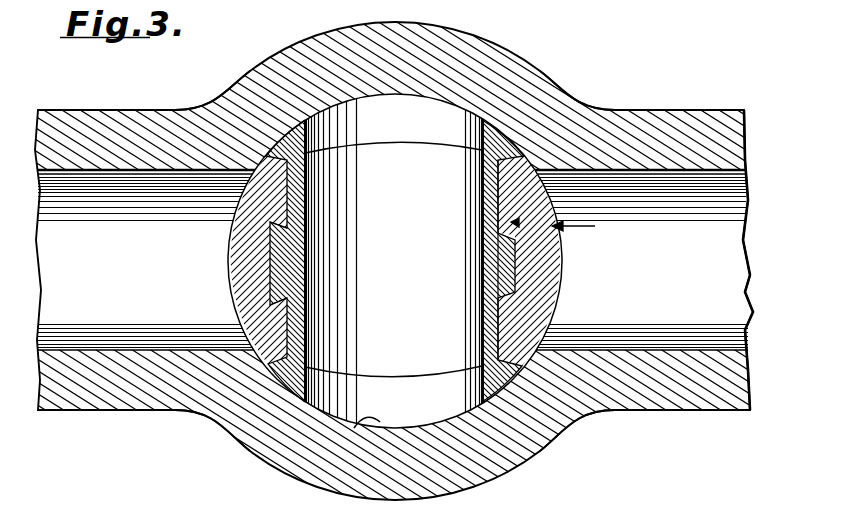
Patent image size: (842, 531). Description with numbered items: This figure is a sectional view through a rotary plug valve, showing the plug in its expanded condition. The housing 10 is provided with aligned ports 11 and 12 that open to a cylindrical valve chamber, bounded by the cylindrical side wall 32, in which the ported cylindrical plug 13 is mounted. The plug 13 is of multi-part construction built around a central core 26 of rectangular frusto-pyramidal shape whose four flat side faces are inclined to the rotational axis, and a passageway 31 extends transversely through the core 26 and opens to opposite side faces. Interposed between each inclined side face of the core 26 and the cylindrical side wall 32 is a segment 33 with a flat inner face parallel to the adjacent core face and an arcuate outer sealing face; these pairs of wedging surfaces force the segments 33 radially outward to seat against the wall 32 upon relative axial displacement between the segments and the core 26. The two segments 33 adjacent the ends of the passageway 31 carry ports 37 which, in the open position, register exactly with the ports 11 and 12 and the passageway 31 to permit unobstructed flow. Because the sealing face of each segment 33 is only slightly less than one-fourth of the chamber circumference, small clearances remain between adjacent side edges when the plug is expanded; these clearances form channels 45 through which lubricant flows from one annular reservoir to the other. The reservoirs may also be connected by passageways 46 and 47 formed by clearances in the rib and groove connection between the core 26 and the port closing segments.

The housing 10 is at (520, 462).
The port 11 is at (202, 350).
The port 12 is at (582, 348).
The plug 13 is at (565, 227).
The core 26 is at (492, 338).
The passageway 31 is at (483, 283).
The cylindrical side wall 32 is at (360, 430).
The segment 33 is at (497, 143).
The port 37 is at (483, 127).
The channel 45 is at (278, 145).
The passageway 46 is at (268, 222).
The passageway 47 is at (268, 248).